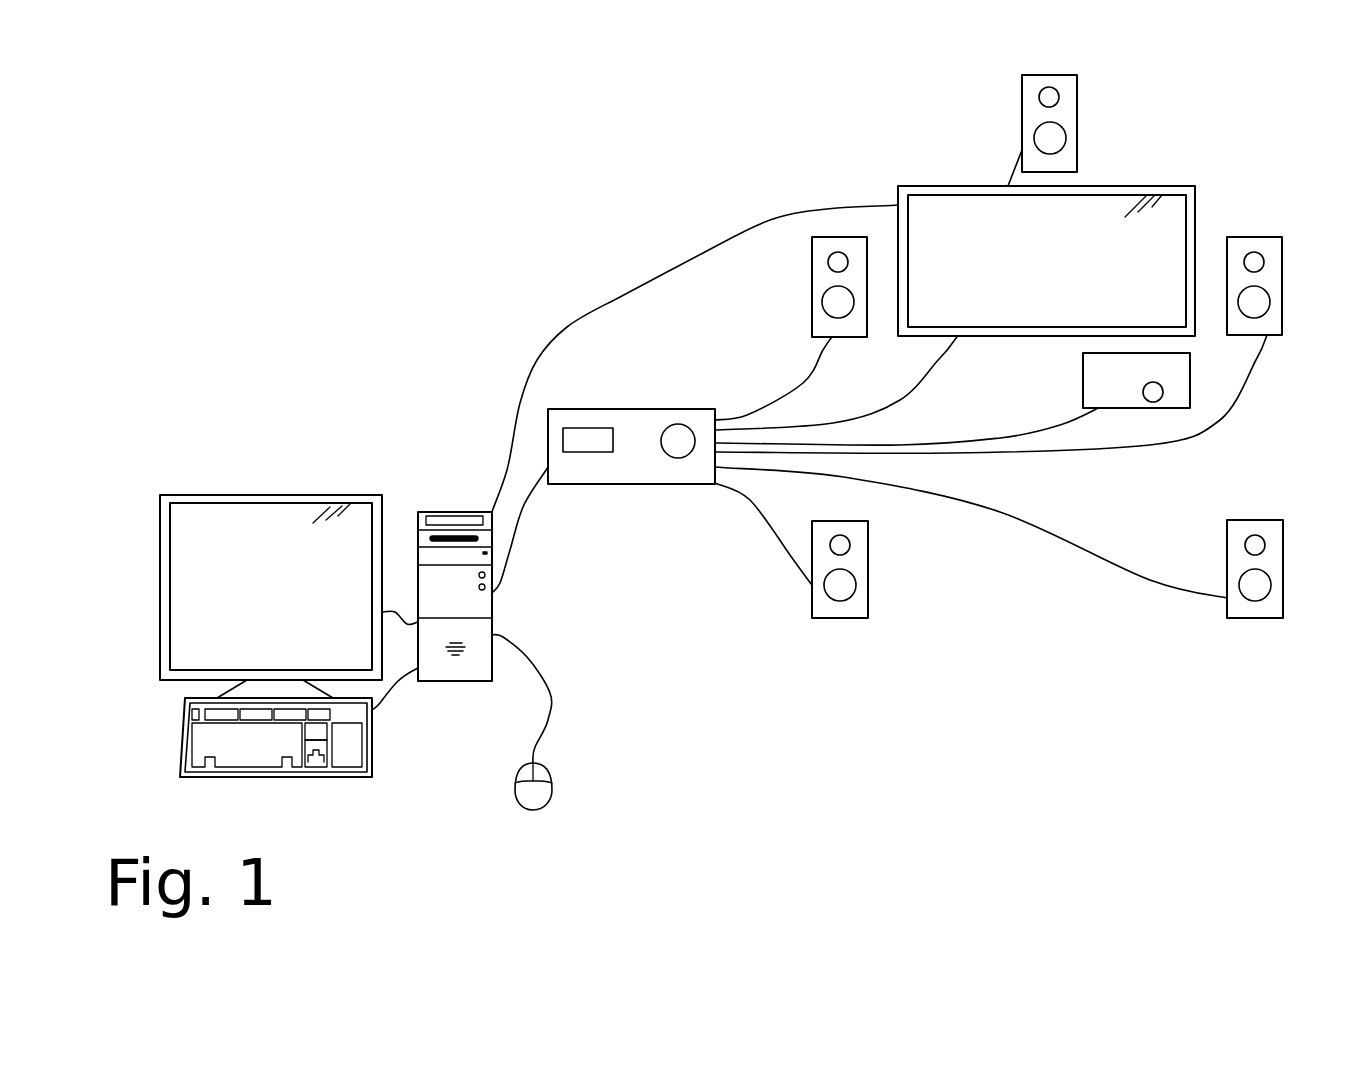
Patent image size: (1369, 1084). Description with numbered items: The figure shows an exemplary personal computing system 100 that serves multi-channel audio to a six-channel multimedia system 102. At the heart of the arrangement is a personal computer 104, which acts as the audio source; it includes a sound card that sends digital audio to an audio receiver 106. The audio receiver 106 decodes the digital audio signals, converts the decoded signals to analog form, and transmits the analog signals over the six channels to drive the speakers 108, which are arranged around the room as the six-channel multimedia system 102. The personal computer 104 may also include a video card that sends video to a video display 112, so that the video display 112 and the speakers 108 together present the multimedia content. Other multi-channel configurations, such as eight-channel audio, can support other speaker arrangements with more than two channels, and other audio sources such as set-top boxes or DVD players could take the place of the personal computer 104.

The personal computing system 100 is at (1112, 687).
The 6-channel multimedia system 102 is at (310, 364).
The personal computer 104 is at (455, 512).
The audio receiver 106 is at (657, 484).
The speakers 108 is at (1077, 109).
The video display 112 is at (1195, 190).